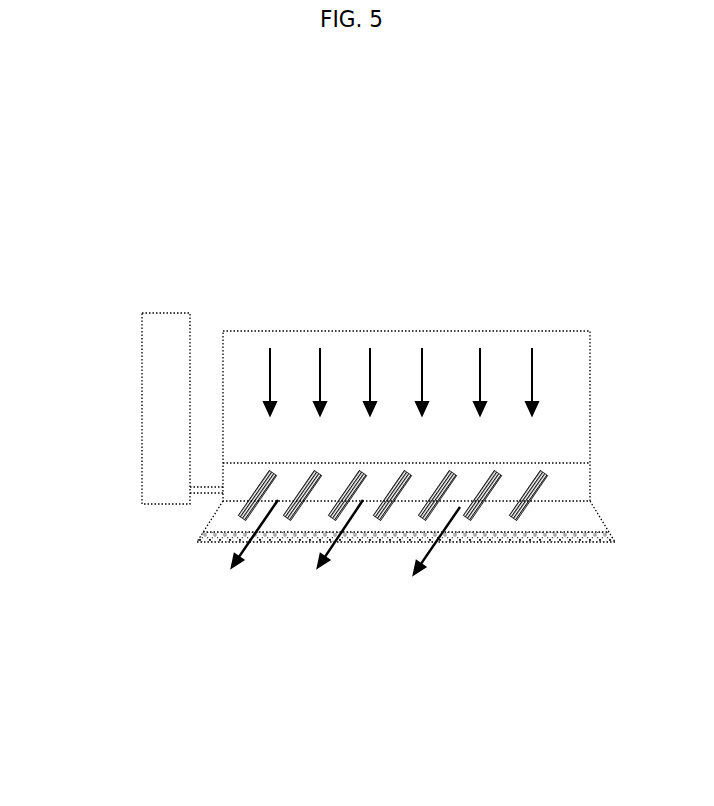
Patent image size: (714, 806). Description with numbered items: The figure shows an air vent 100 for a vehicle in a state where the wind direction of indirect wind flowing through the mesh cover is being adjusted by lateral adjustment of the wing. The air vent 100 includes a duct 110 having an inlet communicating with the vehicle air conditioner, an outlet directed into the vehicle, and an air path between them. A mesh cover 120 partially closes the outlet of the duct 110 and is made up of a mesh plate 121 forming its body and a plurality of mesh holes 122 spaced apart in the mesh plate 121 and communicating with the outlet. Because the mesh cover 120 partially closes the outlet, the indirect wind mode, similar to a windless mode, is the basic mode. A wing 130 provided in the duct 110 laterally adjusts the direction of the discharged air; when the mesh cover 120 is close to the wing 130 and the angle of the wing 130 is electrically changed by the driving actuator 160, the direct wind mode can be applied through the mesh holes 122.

The air vent 100 is at (395, 136).
The duct 110 is at (462, 340).
The mesh cover 120 is at (390, 582).
The mesh plate 121 is at (268, 542).
The mesh holes 122 is at (392, 525).
The wing 130 is at (527, 502).
The driving actuator 160 is at (160, 385).